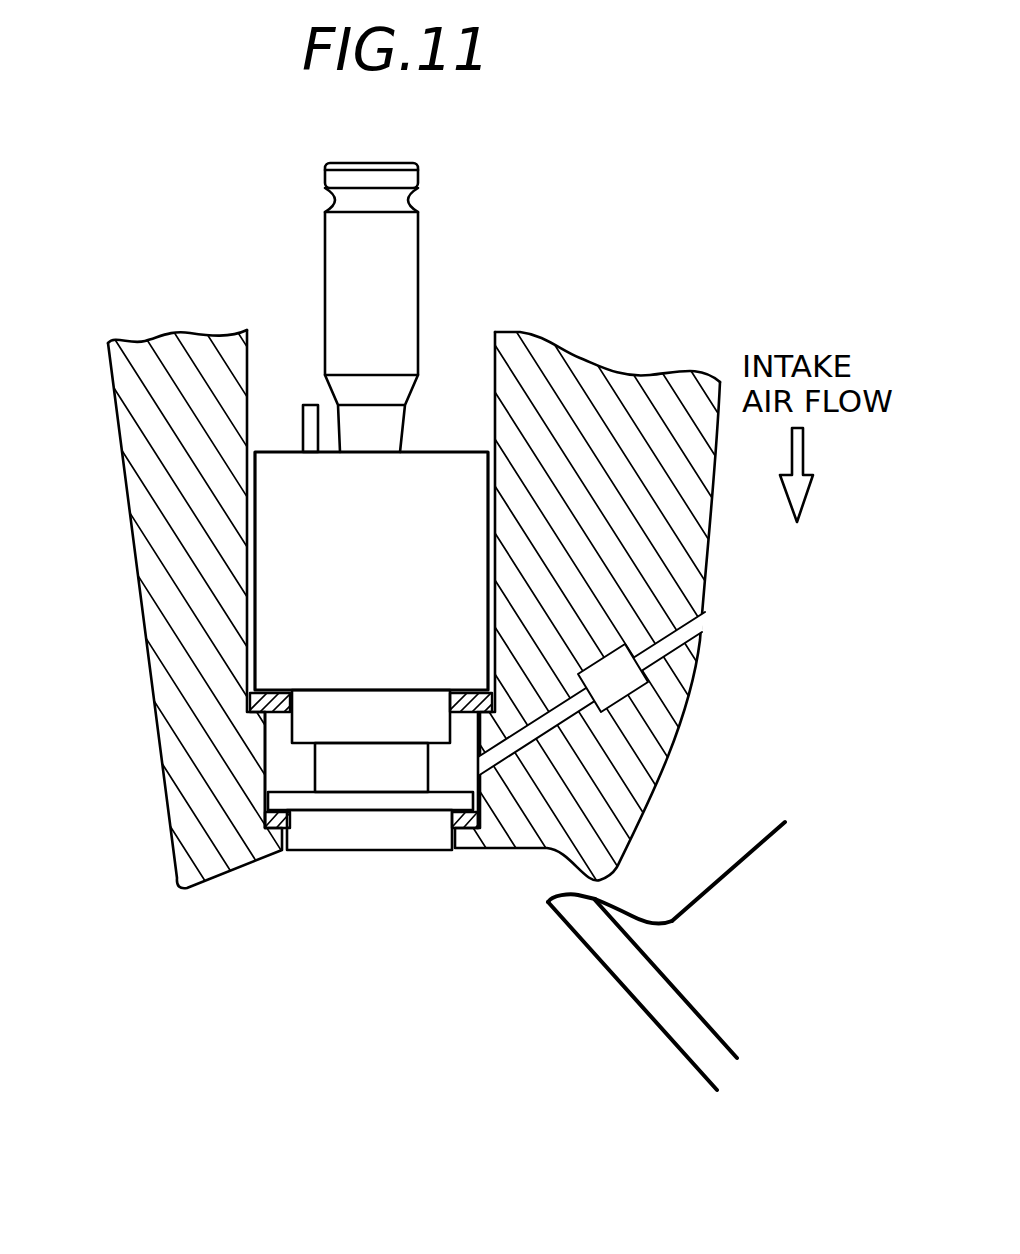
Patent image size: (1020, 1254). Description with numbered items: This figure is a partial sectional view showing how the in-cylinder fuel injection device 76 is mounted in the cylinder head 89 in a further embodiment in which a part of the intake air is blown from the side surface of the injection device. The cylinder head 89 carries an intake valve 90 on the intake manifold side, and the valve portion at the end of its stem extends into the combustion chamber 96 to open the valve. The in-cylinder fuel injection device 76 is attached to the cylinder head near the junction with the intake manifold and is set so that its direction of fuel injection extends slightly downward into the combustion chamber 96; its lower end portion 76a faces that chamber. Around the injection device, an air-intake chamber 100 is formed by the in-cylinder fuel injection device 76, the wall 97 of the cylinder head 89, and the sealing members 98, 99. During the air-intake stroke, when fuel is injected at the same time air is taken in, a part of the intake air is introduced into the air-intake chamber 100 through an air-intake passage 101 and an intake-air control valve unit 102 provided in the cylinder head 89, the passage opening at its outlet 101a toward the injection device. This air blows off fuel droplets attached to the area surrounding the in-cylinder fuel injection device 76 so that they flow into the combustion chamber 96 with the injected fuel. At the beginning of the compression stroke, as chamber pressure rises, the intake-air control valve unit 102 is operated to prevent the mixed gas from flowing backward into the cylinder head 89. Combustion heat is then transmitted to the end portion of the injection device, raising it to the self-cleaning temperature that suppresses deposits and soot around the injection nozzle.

The in-cylinder fuel injection device 76 is at (340, 293).
The injector nozzle tip 76a is at (332, 850).
The cylinder head 89 is at (123, 500).
The intake valve 90 is at (610, 953).
The combustion chamber 96 is at (415, 992).
The wall of the cylinder head 97 is at (207, 338).
The sealing member 98 is at (267, 827).
The sealing member 99 is at (250, 700).
The air-intake chamber 100 is at (277, 758).
The air-intake passage 101 is at (690, 632).
The air passage outlet 101a is at (478, 758).
The intake-air control valve unit 102 is at (617, 688).